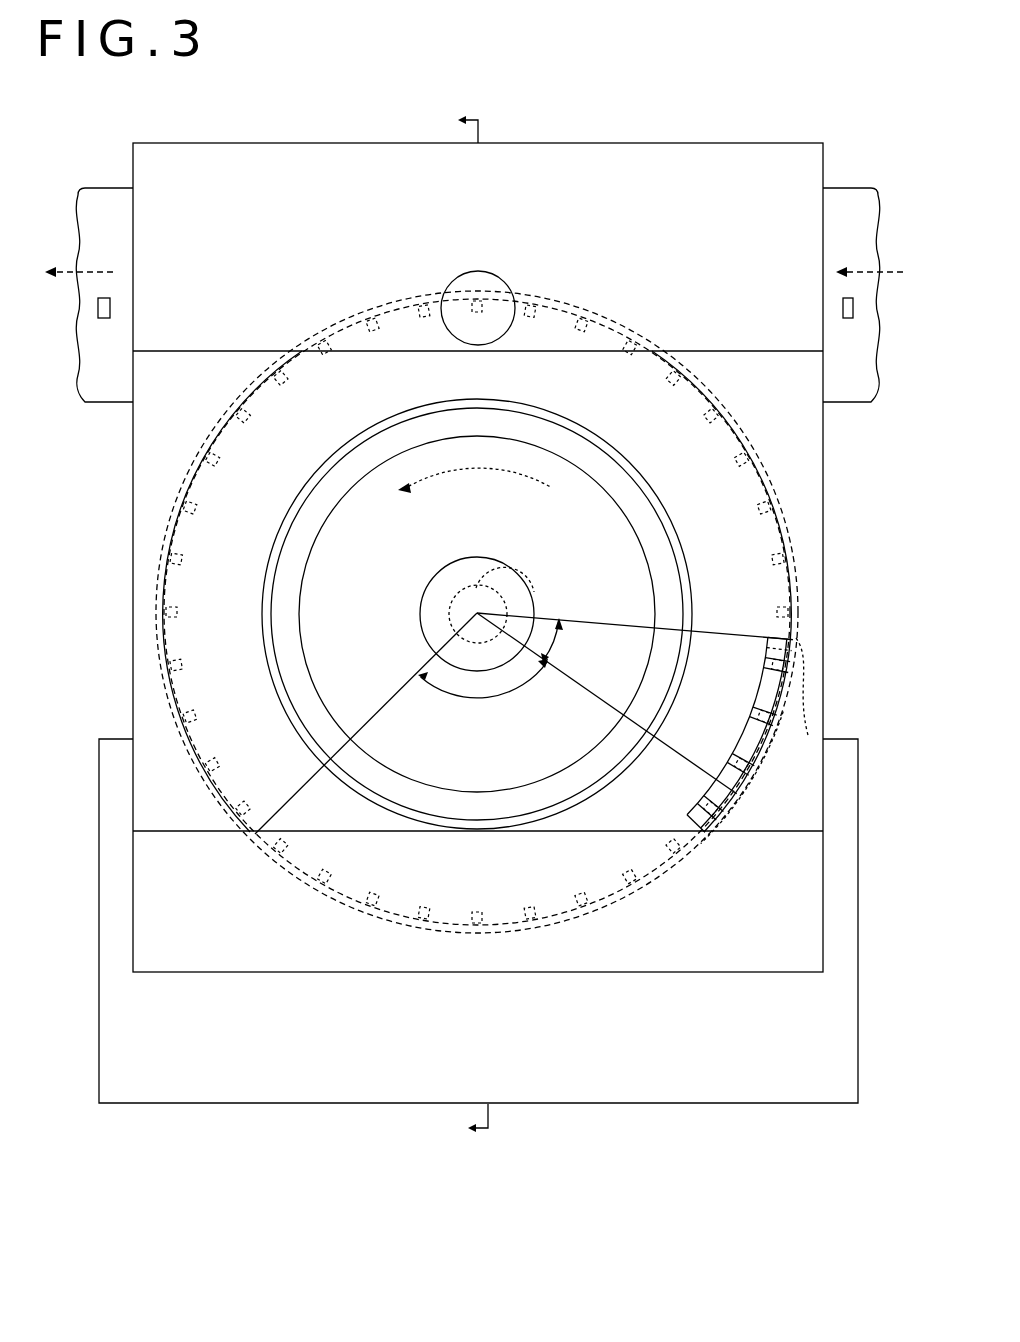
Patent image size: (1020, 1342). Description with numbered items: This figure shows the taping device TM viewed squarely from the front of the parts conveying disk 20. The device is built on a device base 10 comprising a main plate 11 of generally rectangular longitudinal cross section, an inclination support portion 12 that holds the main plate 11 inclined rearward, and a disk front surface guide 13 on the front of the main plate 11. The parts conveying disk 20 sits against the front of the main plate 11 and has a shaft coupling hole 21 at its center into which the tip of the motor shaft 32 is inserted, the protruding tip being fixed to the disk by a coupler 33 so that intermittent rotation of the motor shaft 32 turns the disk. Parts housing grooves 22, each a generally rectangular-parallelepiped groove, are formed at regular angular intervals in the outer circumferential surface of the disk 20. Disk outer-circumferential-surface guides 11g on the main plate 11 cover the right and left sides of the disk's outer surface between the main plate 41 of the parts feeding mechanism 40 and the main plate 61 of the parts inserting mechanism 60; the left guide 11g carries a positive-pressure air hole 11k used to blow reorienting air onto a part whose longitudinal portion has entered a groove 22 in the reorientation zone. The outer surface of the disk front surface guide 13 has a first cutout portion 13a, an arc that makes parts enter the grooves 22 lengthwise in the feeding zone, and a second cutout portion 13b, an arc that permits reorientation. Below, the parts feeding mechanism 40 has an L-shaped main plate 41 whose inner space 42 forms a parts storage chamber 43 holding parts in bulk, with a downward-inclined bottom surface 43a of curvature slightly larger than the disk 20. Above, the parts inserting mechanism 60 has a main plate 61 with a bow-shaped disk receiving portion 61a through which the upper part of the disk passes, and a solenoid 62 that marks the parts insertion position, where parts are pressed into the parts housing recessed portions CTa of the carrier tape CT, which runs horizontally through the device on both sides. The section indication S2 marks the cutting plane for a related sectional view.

The device base 10 is at (427, 591).
The main plate 11 is at (382, 614).
The disk outer-circumferential-surface guide 11g is at (147, 536).
The positive-pressure air hole 11k is at (803, 697).
The inclination support portion 12 is at (842, 1015).
The disk front surface guide 13 is at (190, 592).
The first cutout portion 13a is at (733, 808).
The second cutout portion 13b is at (797, 652).
The parts conveying disk 20 is at (490, 511).
The shaft coupling hole 21 is at (487, 586).
The parts housing groove 22 is at (767, 724).
The motor shaft 32 is at (534, 592).
The coupler 33 is at (426, 612).
The parts feeding mechanism 40 is at (353, 972).
The main plate 41 is at (418, 956).
The inner space 42 is at (477, 727).
The parts storage chamber 43 is at (560, 880).
The bottom surface 43a is at (608, 895).
The parts inserting mechanism 60 is at (268, 143).
The main plate 61 is at (322, 157).
The disk receiving portion 61a is at (378, 300).
The solenoid 62 is at (480, 287).
The section line S2 is at (479, 622).
The carrier tape CT is at (105, 196).
The parts housing recessed portion CTa is at (849, 318).
The taping device TM is at (168, 120).